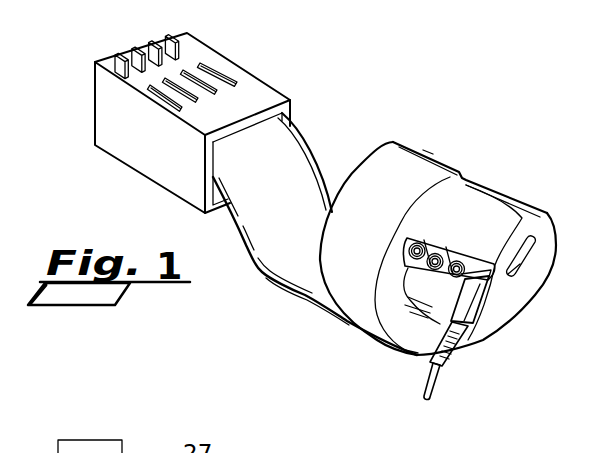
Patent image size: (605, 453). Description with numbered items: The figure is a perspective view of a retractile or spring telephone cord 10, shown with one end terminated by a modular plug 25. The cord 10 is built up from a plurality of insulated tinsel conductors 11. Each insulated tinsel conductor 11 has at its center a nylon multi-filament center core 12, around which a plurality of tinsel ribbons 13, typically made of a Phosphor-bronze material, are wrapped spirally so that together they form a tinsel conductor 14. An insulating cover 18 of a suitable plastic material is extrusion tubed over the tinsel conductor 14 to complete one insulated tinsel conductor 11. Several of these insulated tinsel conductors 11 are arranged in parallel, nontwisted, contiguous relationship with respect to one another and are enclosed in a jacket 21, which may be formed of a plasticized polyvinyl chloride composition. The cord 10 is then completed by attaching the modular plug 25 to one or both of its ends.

The retractile cord 10 is at (373, 100).
The modular plug 25 is at (248, 88).
The jacket 21 is at (302, 273).
The tinsel conductor 14 is at (420, 358).
The insulated tinsel conductor 11 is at (480, 305).
The insulating cover 18 is at (472, 320).
The tinsel ribbon 13 is at (440, 365).
The center core 12 is at (423, 393).